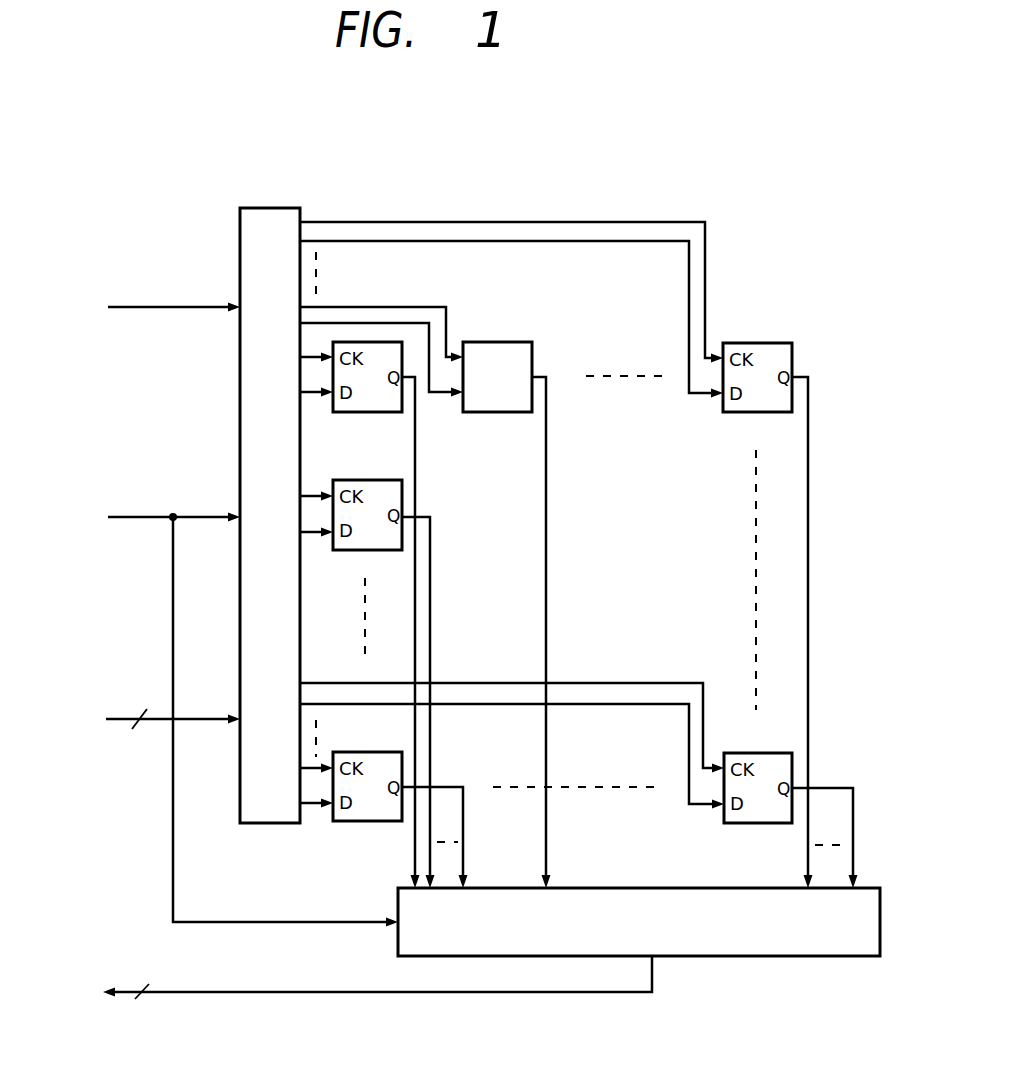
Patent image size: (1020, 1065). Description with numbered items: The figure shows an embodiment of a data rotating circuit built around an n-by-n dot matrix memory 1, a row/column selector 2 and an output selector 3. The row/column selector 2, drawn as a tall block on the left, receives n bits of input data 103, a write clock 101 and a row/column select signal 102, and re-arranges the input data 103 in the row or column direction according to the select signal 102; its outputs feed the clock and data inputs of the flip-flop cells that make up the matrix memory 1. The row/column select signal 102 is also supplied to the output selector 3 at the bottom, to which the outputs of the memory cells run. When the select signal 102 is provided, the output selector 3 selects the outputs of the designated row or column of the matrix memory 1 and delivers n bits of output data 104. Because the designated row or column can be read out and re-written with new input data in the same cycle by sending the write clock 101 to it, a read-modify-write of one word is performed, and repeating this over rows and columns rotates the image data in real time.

The n×n dot matrix memory 1 is at (526, 342).
The row/column selector 2 is at (300, 208).
The output selector 3 is at (870, 888).
The write clock 101 is at (151, 308).
The row/column select signal 102 is at (230, 715).
The input data 103 is at (150, 712).
The output data 104 is at (353, 981).